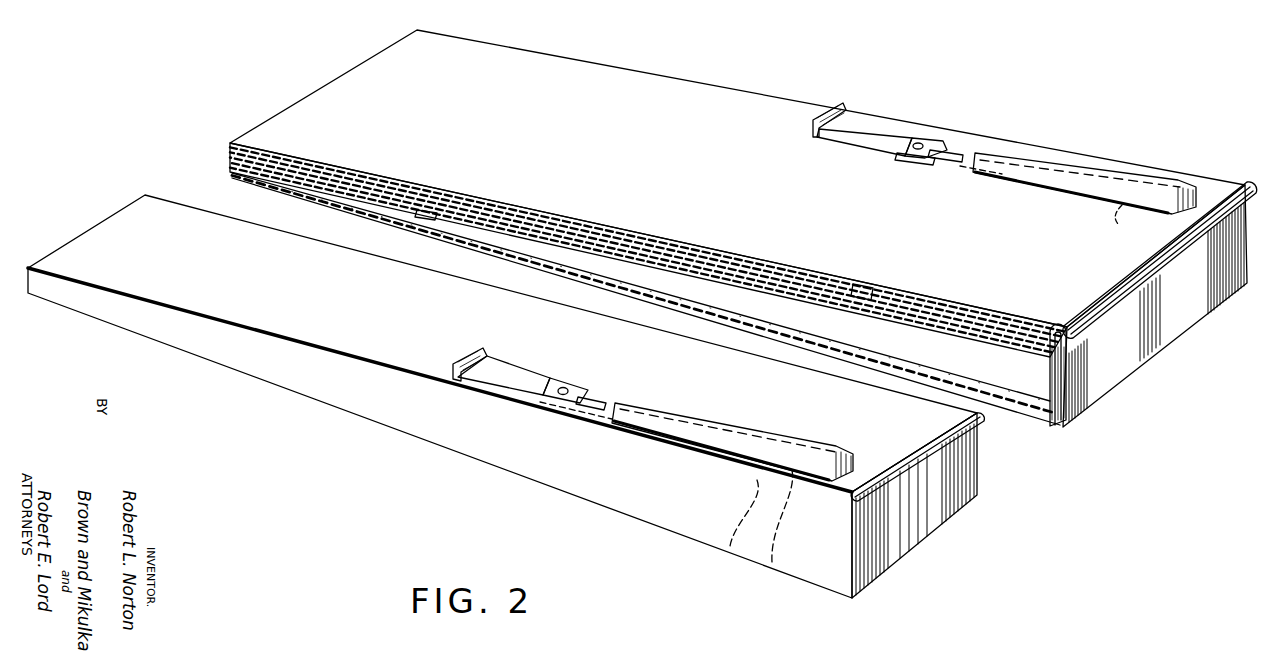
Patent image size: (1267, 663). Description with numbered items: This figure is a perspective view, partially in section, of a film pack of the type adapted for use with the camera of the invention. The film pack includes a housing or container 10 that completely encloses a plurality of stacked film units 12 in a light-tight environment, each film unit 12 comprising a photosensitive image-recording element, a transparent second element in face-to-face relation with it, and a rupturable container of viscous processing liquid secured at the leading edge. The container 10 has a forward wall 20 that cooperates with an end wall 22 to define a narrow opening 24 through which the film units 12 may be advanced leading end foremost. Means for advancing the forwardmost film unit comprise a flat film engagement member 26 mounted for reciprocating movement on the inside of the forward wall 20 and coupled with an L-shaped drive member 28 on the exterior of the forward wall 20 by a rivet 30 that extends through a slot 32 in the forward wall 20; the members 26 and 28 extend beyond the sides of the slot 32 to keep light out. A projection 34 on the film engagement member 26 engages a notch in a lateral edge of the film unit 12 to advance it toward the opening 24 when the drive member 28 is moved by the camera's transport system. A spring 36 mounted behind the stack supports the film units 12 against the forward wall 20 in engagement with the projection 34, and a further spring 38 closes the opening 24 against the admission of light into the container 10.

The housing or container 10 is at (642, 320).
The film unit 12 is at (872, 303).
The forward wall 20 is at (860, 226).
The end wall 22 is at (933, 508).
The opening 24 is at (1070, 342).
The film engagement member 26 is at (792, 472).
The drive member 28 is at (507, 375).
The rivet 30 is at (545, 404).
The slot 32 is at (590, 411).
The projection 34 is at (757, 481).
The spring 36 is at (863, 323).
The spring 38 is at (1068, 357).